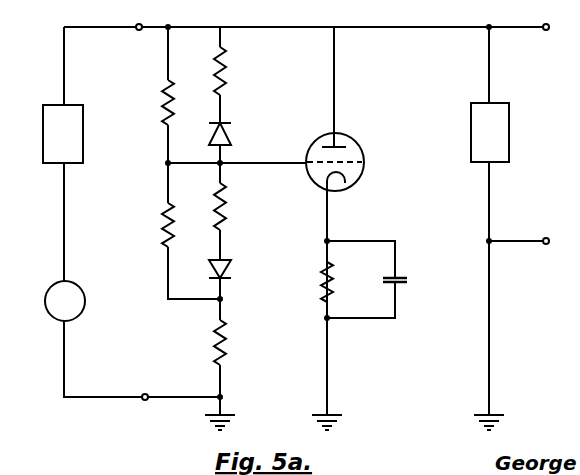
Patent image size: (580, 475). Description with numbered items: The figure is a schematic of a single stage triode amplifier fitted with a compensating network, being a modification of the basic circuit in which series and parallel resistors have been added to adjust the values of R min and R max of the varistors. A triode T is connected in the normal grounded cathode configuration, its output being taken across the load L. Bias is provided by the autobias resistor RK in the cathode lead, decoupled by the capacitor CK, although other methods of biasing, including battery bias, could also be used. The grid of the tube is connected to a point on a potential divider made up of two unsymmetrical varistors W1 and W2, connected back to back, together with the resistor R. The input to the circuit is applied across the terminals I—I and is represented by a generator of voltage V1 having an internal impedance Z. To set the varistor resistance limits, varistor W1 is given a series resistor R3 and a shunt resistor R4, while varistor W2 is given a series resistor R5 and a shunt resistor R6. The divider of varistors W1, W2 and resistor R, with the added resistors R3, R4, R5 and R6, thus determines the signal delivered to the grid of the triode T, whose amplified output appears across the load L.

The input terminals I is at (138, 25).
The internal impedance Z is at (63, 134).
The generator of voltage V1 is at (65, 301).
The series resistor R3 is at (226, 66).
The shunt resistor R4 is at (162, 106).
The unsymmetrical varistor W1 is at (228, 134).
The series resistor R5 is at (226, 202).
The shunt resistor R6 is at (162, 214).
The unsymmetrical varistor W2 is at (227, 268).
The resistor R is at (226, 339).
The triode T is at (355, 141).
The autobias resistor RK is at (339, 282).
The capacitor CK is at (398, 284).
The load L is at (490, 132).